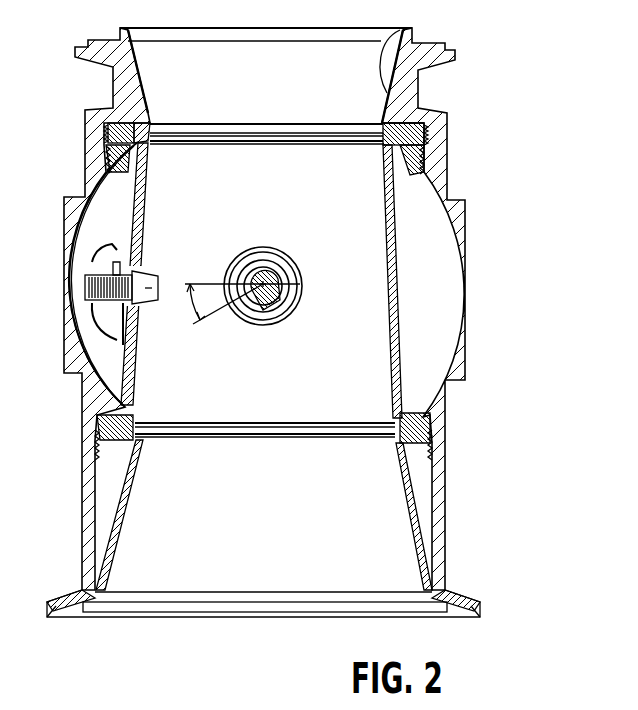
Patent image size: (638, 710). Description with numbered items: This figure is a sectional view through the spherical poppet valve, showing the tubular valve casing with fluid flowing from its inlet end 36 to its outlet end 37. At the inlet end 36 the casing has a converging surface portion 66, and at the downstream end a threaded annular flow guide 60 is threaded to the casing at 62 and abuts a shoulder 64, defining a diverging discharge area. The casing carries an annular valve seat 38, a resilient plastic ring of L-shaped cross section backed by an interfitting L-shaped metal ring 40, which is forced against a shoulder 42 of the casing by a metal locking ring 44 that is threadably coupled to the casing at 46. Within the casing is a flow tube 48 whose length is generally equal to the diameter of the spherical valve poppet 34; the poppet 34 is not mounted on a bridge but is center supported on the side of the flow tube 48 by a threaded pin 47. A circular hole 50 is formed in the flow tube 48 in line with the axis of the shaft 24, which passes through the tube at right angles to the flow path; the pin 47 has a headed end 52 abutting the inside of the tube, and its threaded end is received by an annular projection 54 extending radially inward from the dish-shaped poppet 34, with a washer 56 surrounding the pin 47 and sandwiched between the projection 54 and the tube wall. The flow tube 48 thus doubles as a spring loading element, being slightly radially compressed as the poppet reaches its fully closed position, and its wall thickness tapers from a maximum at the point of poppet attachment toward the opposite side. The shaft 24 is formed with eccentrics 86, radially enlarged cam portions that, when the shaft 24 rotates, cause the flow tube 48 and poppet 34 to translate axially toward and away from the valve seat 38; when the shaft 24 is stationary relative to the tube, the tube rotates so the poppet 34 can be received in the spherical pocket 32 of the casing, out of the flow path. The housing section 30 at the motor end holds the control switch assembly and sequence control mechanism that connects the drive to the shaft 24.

The shaft 24 is at (272, 307).
The housing section 30 is at (233, 302).
The spherical pocket 32 is at (70, 363).
The spherical valve poppet 34 is at (83, 330).
The inlet end 36 is at (280, 38).
The outlet end 37 is at (290, 608).
The annular valve seat 38 is at (418, 96).
The L-shaped metal ring 40 is at (448, 125).
The shoulder 42 is at (423, 117).
The metal locking ring 44 is at (426, 146).
The threaded coupling 46 is at (422, 161).
The threaded pin 47 is at (125, 315).
The flow tube 48 is at (144, 180).
The circular hole 50 is at (133, 272).
The headed end 52 is at (147, 305).
The annular projection 54 is at (100, 265).
The washer 56 is at (118, 273).
The threaded annular flow guide 60 is at (400, 467).
The threaded connection 62 is at (431, 443).
The shoulder 64 is at (433, 420).
The converging surface portion 66 is at (413, 29).
The eccentrics 86 is at (250, 302).